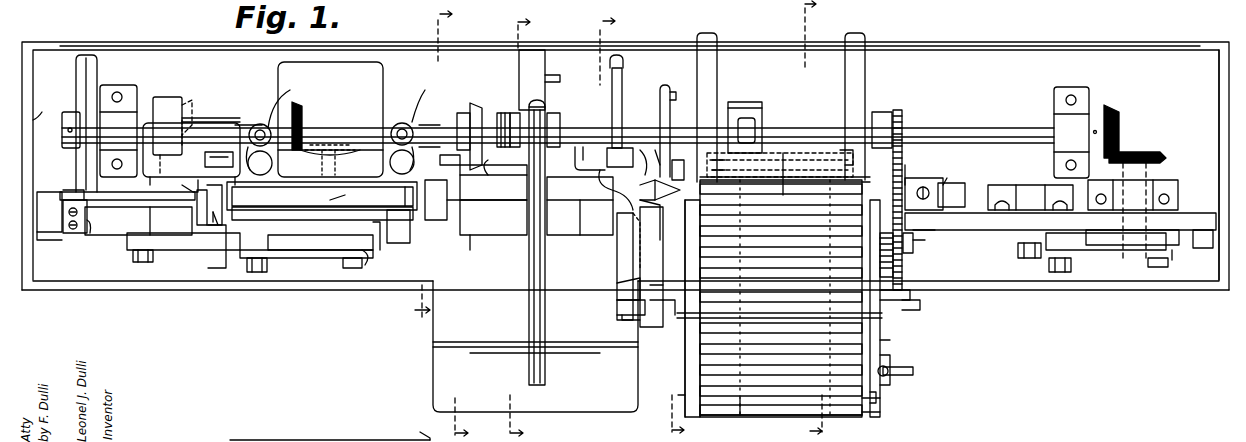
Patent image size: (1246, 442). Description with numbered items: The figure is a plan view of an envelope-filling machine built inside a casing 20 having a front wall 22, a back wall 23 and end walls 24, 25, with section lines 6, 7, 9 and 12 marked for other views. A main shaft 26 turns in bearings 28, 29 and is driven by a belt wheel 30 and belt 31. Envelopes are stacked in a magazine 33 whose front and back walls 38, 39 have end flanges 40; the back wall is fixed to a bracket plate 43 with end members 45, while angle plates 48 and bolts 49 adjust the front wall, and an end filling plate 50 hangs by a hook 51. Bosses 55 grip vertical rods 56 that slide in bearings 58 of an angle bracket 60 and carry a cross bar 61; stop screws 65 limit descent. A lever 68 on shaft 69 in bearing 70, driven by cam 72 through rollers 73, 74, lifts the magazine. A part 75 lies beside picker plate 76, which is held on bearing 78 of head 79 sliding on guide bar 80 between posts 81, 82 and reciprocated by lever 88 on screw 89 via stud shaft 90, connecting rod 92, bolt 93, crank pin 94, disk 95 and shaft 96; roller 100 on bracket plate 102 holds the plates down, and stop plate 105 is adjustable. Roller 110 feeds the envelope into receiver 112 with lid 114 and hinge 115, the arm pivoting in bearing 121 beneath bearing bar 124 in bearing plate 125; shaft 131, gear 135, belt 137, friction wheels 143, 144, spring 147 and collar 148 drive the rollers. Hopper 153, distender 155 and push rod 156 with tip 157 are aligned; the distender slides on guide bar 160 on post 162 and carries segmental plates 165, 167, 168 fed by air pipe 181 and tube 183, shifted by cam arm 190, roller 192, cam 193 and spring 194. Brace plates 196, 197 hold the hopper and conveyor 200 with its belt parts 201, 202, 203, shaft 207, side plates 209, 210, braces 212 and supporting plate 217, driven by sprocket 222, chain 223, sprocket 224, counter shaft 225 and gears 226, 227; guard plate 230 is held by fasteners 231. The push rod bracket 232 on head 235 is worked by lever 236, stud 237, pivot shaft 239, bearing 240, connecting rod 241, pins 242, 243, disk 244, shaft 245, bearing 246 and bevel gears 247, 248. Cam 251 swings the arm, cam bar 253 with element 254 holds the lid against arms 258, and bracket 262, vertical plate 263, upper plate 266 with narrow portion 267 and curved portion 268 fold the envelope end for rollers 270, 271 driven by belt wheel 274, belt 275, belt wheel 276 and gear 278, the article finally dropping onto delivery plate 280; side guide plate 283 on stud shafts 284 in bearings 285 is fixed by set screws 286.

The section line 6 is at (441, 224).
The section line 7 is at (525, 228).
The section line 9 is at (647, 226).
The section line 12 is at (822, 220).
The casing 20 is at (50, 43).
The front wall 22 is at (115, 290).
The back wall 23 is at (132, 43).
The end wall 24 is at (43, 111).
The end wall 25 is at (1223, 85).
The main shaft 26 is at (62, 131).
The bearing 28 is at (112, 88).
The bearing 29 is at (1061, 89).
The belt wheel 30 is at (76, 76).
The belt 31 is at (84, 91).
The magazine 33 is at (287, 440).
The front wall 38 is at (347, 440).
The back wall 39 is at (322, 196).
The end flange 40 is at (322, 196).
The bracket plate 43 is at (255, 440).
The end member 45 is at (223, 218).
The angle plate 48 is at (225, 200).
The bolt 49 is at (456, 222).
The end filling plate 50 is at (430, 438).
The hook 51 is at (417, 424).
The boss 55 is at (282, 112).
The vertical rod 56 is at (392, 152).
The bearing 58 is at (247, 118).
The angle bracket 60 is at (241, 82).
The cross bar 61 is at (362, 148).
The stop screw 65 is at (352, 100).
The lever 68 is at (315, 106).
The shaft 69 is at (210, 154).
The bearing 70 is at (213, 214).
The cam 72 is at (168, 97).
The roller 73 is at (184, 102).
The roller 74 is at (322, 140).
The motor housing 75 is at (102, 198).
The picker plate 76 is at (172, 200).
The bearing 78 is at (89, 234).
The head 79 is at (106, 236).
The guide bar 80 is at (42, 233).
The post 81 is at (49, 196).
The post 82 is at (398, 244).
The lever 88 is at (72, 190).
The screw 89 is at (212, 270).
The stud shaft 90 is at (143, 263).
The connecting rod 92 is at (300, 252).
The bolt 93 is at (263, 273).
The crank pin 94 is at (346, 270).
The disk 95 is at (363, 268).
The shaft 96 is at (316, 256).
The roller 100 is at (179, 184).
The bracket plate 102 is at (224, 124).
The stop plate 105 is at (215, 214).
The roller 110 is at (470, 228).
The receiver 112 is at (505, 237).
The lid 114 is at (588, 217).
The hinge 115 is at (562, 175).
The bearing 121 is at (555, 237).
The bearing bar 124 is at (560, 72).
The bearing plate 125 is at (538, 53).
The shaft 131 is at (446, 165).
The gear wheel 135 is at (446, 155).
The belt 137 is at (490, 165).
The bevel friction wheel 143 is at (428, 160).
The bevel friction wheel 144 is at (478, 105).
The spring 147 is at (505, 118).
The collar 148 is at (512, 113).
The hopper 153 is at (745, 182).
The envelope opener and distender 155 is at (677, 160).
The push rod 156 is at (963, 170).
The tip 157 is at (612, 196).
The guide bar 160 is at (975, 213).
The post 162 is at (1203, 249).
The segmental plate 165 is at (651, 202).
The segmental plate 167 is at (641, 224).
The segmental plate 168 is at (655, 150).
The air supply pipe 181 is at (624, 72).
The flexible tube 183 is at (645, 150).
The cam arm 190 is at (760, 130).
The roller 192 is at (745, 118).
The cam 193 is at (750, 102).
The spring 194 is at (727, 167).
The brace plate 196 is at (718, 65).
The brace plate 197 is at (866, 63).
The conveyor 200 is at (781, 306).
The slat 201 is at (725, 340).
The slat 202 is at (852, 343).
The axle 203 is at (835, 297).
The shaft 207 is at (680, 398).
The side plate 209 is at (781, 428).
The side plate 210 is at (892, 350).
The brace 212 is at (685, 368).
The belt supporting plate 217 is at (740, 412).
The sprocket wheel 222 is at (893, 112).
The sprocket chain 223 is at (904, 112).
The sprocket wheel 224 is at (920, 305).
The counter shaft 225 is at (915, 290).
The gear wheel 226 is at (882, 263).
The gear wheel 227 is at (912, 178).
The guard plate 230 is at (785, 150).
The fastening device 231 is at (845, 158).
The bracket 232 is at (947, 182).
The head 235 is at (918, 248).
The lever 236 is at (955, 249).
The stud shaft 237 is at (925, 258).
The pivot shaft 239 is at (925, 186).
The bearing 240 is at (1018, 190).
The connecting rod 241 is at (1100, 251).
The pivot pin 242 is at (1061, 273).
The crank pin 243 is at (1158, 268).
The disk 244 is at (1175, 252).
The shaft 245 is at (1137, 252).
The bearing 246 is at (1151, 185).
The bevel gear 247 is at (1147, 154).
The bevel gear 248 is at (1119, 110).
The cam 251 is at (524, 100).
The cam bar 253 is at (542, 110).
The rod 254 is at (595, 130).
The arm 258 is at (583, 125).
The bracket 262 is at (667, 330).
The vertical plate 263 is at (640, 322).
The upper plate 266 is at (623, 230).
The narrow portion 267 is at (618, 267).
The upwardly curved portion 268 is at (618, 288).
The roller 270 is at (618, 303).
The roller 271 is at (620, 312).
The belt wheel 274 is at (665, 308).
The belt 275 is at (665, 85).
The belt wheel 276 is at (668, 90).
The gear wheel 278 is at (662, 311).
The delivery plate 280 is at (443, 378).
The side guide plate 283 is at (872, 413).
The stud shaft 284 is at (948, 371).
The bearing 285 is at (966, 383).
The set screw 286 is at (890, 366).